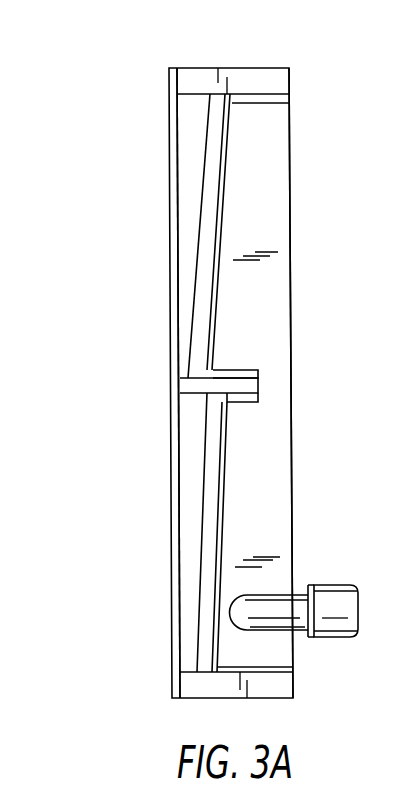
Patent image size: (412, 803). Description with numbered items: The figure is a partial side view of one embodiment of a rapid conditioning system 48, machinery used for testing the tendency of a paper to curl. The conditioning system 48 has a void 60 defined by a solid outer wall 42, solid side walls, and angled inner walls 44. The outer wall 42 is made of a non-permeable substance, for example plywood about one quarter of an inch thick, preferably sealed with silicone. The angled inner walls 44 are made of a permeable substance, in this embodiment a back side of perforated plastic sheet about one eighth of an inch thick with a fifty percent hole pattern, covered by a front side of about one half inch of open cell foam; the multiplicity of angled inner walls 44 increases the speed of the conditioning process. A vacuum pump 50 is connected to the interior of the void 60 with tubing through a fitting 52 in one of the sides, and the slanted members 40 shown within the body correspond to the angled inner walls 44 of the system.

The rapid conditioning system 48 is at (281, 40).
The light pipe 40 is at (190, 125).
The outer wall 42 is at (175, 257).
The angled inner wall 44 is at (212, 190).
The void 60 is at (283, 298).
The vacuum pump 50 is at (275, 600).
The LED housing 52 is at (343, 628).